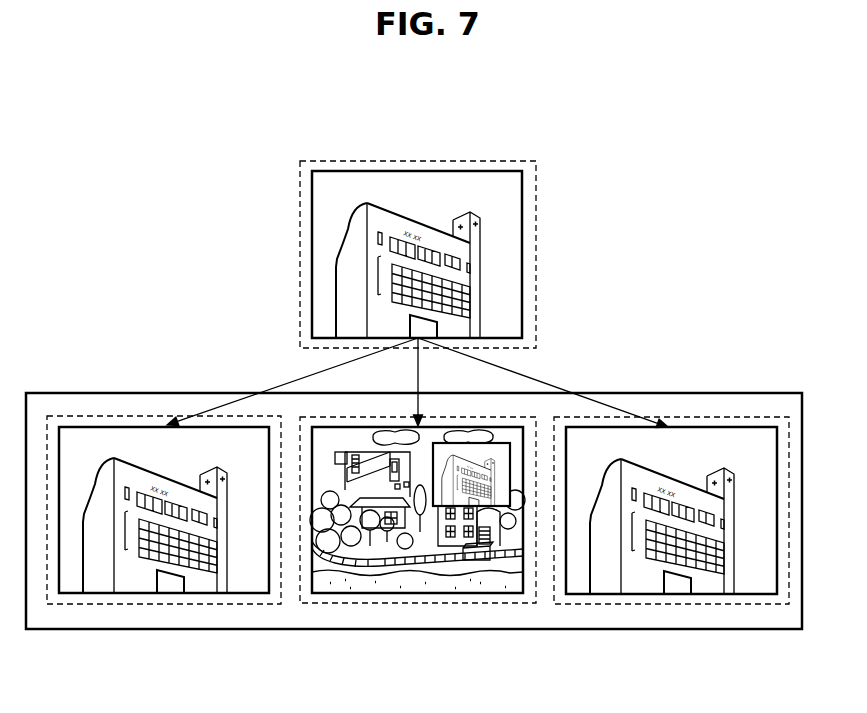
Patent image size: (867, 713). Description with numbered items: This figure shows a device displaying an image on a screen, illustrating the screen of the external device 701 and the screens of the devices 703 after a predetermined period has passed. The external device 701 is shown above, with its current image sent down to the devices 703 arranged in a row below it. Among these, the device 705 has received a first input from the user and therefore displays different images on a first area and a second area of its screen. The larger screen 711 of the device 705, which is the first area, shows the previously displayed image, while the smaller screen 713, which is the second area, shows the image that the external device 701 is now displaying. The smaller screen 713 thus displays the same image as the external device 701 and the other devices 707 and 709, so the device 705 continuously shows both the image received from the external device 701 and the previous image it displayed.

The external device 701 is at (417, 171).
The devices 703 is at (695, 393).
The device 705 is at (418, 604).
The device 707 is at (670, 604).
The device 709 is at (165, 604).
The larger screen 711 is at (351, 594).
The smaller screen 713 is at (473, 443).